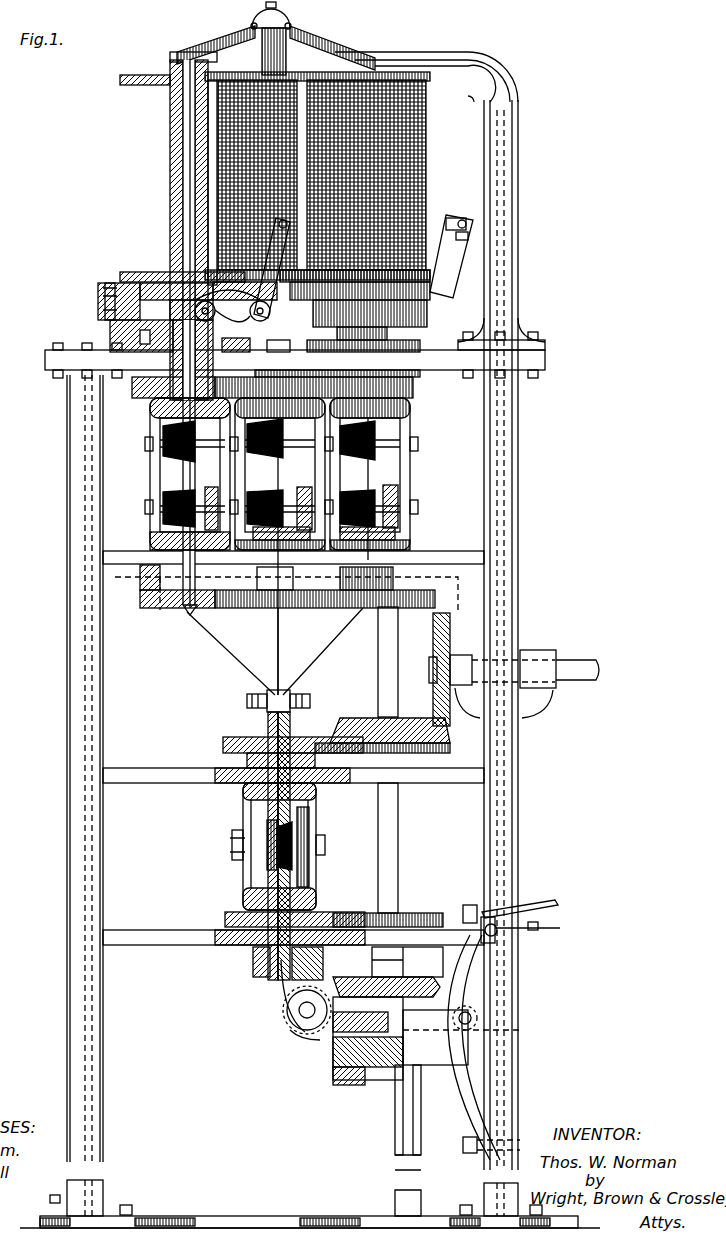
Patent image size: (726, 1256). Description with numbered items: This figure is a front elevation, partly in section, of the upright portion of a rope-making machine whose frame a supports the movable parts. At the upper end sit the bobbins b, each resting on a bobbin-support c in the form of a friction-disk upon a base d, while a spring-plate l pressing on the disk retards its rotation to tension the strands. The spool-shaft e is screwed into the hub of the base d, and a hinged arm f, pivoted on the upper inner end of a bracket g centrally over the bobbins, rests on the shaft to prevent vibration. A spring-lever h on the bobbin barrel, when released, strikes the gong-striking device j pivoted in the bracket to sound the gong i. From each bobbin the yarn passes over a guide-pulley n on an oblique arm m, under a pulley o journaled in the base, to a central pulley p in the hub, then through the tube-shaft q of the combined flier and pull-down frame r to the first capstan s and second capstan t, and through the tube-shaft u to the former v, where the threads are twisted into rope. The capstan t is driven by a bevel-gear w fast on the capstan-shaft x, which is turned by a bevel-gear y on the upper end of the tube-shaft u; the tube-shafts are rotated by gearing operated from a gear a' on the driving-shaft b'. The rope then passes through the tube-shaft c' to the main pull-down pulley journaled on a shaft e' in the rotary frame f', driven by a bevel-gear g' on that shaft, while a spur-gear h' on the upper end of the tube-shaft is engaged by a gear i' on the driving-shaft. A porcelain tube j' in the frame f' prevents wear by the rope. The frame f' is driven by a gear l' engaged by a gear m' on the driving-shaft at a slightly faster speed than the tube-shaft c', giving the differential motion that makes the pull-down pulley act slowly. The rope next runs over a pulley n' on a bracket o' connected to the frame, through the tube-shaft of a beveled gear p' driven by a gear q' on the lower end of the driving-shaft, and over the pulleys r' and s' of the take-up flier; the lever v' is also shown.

The frame a is at (310, 664).
The bobbin b is at (293, 176).
The bobbin-support c is at (198, 187).
The base d is at (98, 313).
The spool-shaft e is at (177, 230).
The arm f is at (272, 42).
The bracket g is at (426, 77).
The spring-lever h is at (173, 334).
The gong-striking device j is at (258, 40).
The spring-plate l is at (106, 286).
The arm m is at (366, 266).
The guide-pulley n is at (462, 220).
The pulley o is at (243, 318).
The central pulley p is at (227, 309).
The tube-shaft q is at (162, 359).
The combined flier and pull-down frame r is at (280, 474).
The first capstan s is at (269, 446).
The second capstan t is at (269, 501).
The tube-shaft u is at (187, 614).
The former v is at (275, 350).
The bevel-gear w is at (428, 484).
The capstan-shaft x is at (280, 556).
The bevel-gear y is at (150, 524).
The gear k' is at (286, 588).
The gear a' is at (324, 742).
The driving-shaft b' is at (388, 662).
The tube-shaft c' is at (294, 707).
The shaft e' is at (335, 841).
The rotary frame f' is at (318, 833).
The bevel-gear g' is at (326, 847).
The spur-gear h' is at (289, 740).
The gong i is at (388, 848).
The gear i' is at (464, 727).
The porcelain tube j' is at (259, 846).
The gear l' is at (290, 915).
The gear m' is at (389, 908).
The pulley n' is at (289, 1000).
The bracket o' is at (302, 963).
The beveled gear p' is at (412, 1096).
The gear q' is at (407, 962).
The pulley r' is at (499, 1047).
The pulley s' is at (527, 932).
The arm v' is at (510, 913).